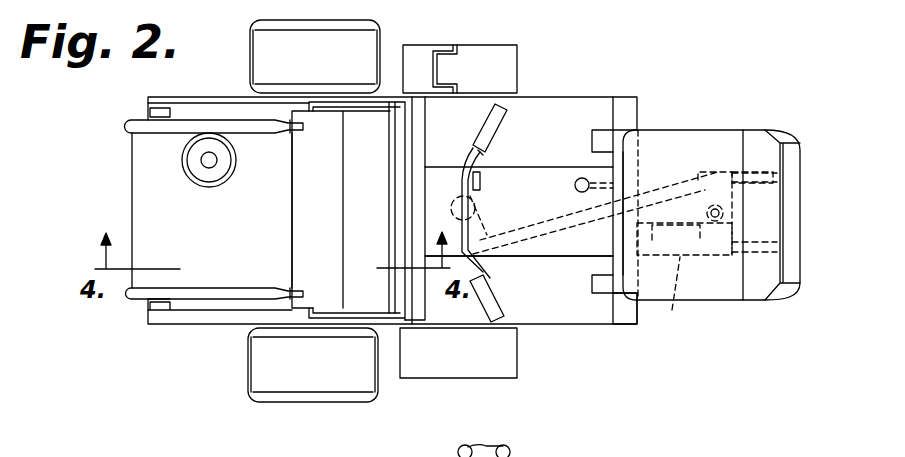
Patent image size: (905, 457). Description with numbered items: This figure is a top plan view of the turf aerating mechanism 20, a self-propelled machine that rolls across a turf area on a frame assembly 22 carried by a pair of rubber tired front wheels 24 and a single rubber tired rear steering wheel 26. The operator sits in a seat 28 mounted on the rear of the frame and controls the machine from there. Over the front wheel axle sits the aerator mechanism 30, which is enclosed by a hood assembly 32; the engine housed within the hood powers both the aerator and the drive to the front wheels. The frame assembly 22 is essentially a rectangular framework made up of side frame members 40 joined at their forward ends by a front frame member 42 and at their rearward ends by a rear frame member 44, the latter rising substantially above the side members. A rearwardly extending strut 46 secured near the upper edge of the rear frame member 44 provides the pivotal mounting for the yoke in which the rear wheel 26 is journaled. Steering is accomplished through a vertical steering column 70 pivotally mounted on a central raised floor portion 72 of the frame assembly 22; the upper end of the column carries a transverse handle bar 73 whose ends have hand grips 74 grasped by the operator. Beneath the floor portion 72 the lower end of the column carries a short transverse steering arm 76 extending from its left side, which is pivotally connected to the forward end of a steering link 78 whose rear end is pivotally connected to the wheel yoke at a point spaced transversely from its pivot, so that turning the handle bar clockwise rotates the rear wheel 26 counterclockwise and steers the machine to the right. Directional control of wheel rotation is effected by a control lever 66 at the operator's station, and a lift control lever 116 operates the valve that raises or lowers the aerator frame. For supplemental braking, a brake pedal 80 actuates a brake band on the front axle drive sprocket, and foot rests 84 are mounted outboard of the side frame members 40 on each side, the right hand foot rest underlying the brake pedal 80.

The turf aerating mechanism 20 is at (560, 98).
The frame assembly 22 is at (203, 325).
The front wheels 24 is at (252, 29).
The rear steering wheel 26 is at (672, 310).
The seat 28 is at (690, 130).
The aerator mechanism 30 is at (147, 172).
The hood assembly 32 is at (145, 207).
The side frame members 40 is at (191, 97).
The front frame member 42 is at (145, 302).
The rear frame member 44 is at (632, 328).
The strut 46 is at (657, 245).
The control lever 66 is at (481, 184).
The steering column 70 is at (452, 195).
The raised floor portion 72 is at (548, 257).
The handle bar 73 is at (483, 156).
The hand grips 74 is at (498, 119).
The steering arm 76 is at (489, 213).
The steering link 78 is at (563, 233).
The brake pedal 80 is at (452, 62).
The foot rests 84 is at (516, 52).
The lift control lever 116 is at (575, 182).